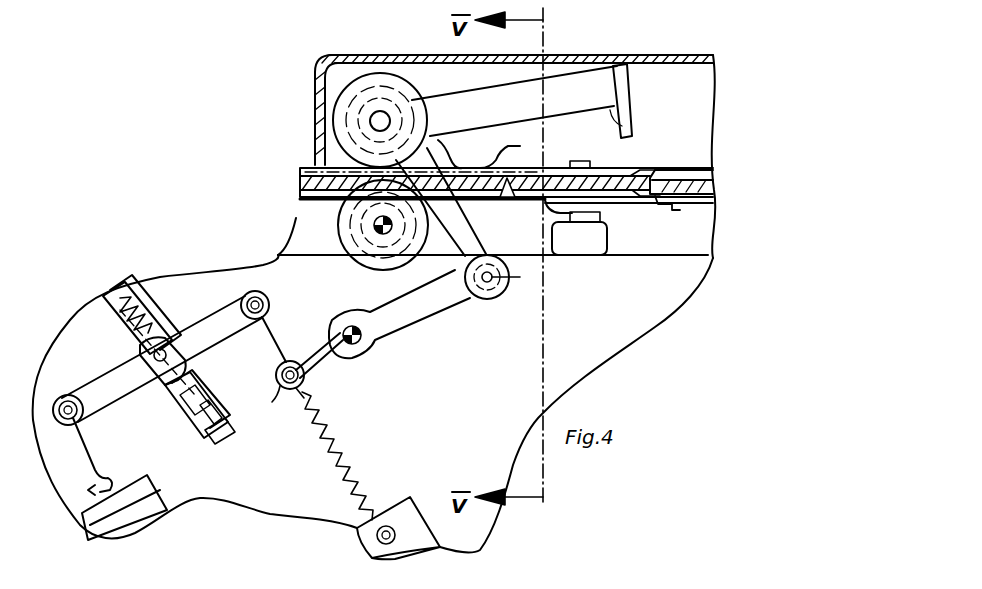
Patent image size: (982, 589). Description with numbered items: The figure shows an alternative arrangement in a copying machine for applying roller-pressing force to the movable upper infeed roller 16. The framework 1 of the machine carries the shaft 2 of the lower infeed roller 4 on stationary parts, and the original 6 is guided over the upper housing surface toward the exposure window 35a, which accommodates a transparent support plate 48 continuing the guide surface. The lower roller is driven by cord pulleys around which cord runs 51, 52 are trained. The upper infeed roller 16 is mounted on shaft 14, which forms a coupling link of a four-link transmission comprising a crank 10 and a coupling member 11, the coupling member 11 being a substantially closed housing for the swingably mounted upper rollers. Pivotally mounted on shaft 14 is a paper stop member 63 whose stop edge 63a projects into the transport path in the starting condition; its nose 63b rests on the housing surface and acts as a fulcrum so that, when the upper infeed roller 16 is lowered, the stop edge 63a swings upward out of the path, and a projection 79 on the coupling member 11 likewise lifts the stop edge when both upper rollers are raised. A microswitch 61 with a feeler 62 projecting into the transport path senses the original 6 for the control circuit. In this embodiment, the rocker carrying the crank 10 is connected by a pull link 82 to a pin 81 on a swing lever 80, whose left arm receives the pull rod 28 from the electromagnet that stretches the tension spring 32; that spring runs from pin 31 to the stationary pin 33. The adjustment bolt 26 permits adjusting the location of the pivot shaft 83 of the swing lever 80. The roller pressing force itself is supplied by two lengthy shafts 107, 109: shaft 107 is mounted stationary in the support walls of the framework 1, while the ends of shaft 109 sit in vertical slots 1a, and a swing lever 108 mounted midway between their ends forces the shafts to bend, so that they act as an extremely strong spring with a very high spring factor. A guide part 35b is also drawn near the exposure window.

The framework 1 is at (658, 324).
The vertical slots 1a is at (470, 276).
The shaft 2 is at (393, 228).
The lower infeed roller 4 is at (340, 224).
The original 6 is at (312, 172).
The crank 10 is at (470, 234).
The coupling member 11 is at (674, 80).
The shaft 14 is at (380, 118).
The upper infeed roller 16 is at (345, 85).
The adjustment screw 26 is at (232, 434).
The pull rod 28 is at (88, 441).
The pin 31 is at (278, 401).
The tension spring 32 is at (335, 448).
The stationary pin 33 is at (386, 526).
The exposure window 35a is at (674, 206).
The guide part 35b is at (640, 172).
The transparent support plate 48 is at (700, 182).
The cord run 51 is at (672, 258).
The cord run 52 is at (323, 257).
The microswitch 61 is at (600, 232).
The feeler 62 is at (508, 178).
The paper stop member 63 is at (588, 95).
The stop edge 63a is at (628, 119).
The nose 63b is at (482, 148).
The projection 79 is at (576, 162).
The swing lever 80 is at (196, 345).
The pin 81 is at (270, 304).
The pull link 82 is at (295, 353).
The pivot shaft 83 is at (162, 348).
The shaft 107 is at (342, 334).
The swing lever 108 is at (420, 318).
The shaft 109 is at (565, 243).